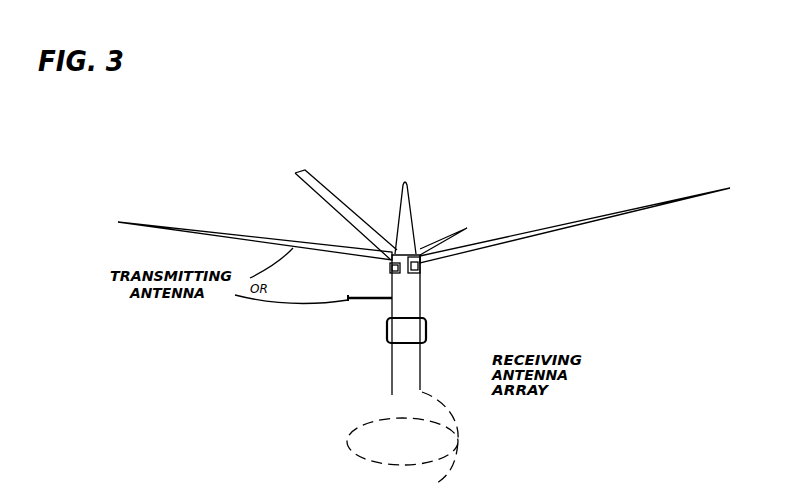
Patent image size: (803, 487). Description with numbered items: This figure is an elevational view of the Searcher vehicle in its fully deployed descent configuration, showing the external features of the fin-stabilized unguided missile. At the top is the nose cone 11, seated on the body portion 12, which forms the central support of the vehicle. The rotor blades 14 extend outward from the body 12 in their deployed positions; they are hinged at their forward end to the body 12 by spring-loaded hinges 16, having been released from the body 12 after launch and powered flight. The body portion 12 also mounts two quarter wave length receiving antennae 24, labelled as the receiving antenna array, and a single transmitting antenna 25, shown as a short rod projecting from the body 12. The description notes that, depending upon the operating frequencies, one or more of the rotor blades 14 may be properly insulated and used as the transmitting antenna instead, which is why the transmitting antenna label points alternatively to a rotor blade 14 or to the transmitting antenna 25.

The nose cone 11 is at (409, 190).
The body portion 12 is at (422, 290).
The rotor blades 14 is at (310, 189).
The spring-loaded hinges 16 is at (391, 276).
The quarter wave length receiving antennae 24 is at (390, 367).
The transmitting antenna 25 is at (359, 301).